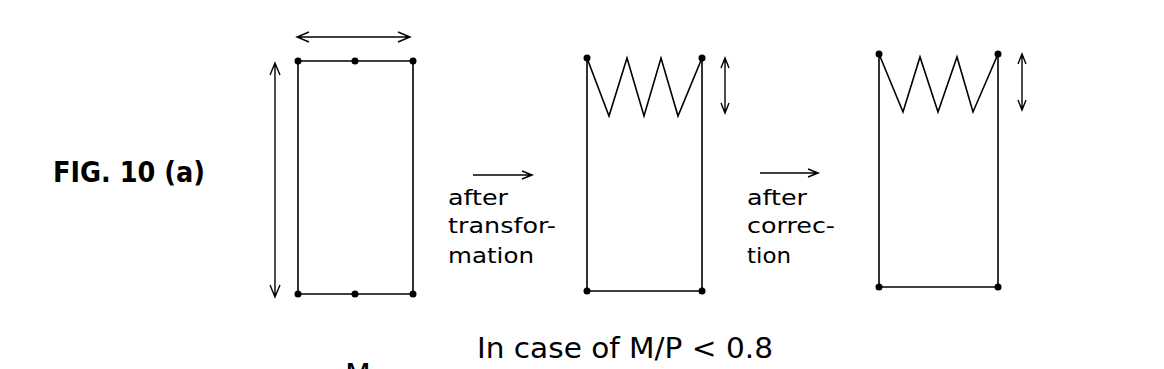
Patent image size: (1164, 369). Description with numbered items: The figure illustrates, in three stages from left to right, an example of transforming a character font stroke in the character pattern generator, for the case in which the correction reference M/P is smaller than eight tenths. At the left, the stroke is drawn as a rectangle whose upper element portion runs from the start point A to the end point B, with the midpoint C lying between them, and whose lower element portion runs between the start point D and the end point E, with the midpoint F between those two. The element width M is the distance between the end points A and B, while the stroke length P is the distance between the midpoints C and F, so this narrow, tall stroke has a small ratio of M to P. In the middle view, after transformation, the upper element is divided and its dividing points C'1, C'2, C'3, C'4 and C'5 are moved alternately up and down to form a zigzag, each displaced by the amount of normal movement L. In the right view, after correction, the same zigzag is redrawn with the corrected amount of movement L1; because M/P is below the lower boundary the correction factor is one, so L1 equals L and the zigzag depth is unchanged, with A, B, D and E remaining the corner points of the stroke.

The start point A is at (578, 43).
The end point B is at (719, 43).
The midpoint C is at (355, 80).
The start point D is at (717, 310).
The end point E is at (580, 310).
The midpoint F is at (355, 313).
The element width M is at (353, 22).
The stroke length P is at (264, 180).
The amount of normal movement L is at (736, 85).
The amount of movement after correction L1 is at (1060, 82).
The dividing point C'1 is at (617, 155).
The dividing point C'2 is at (614, 31).
The dividing point C'3 is at (649, 132).
The dividing point C'4 is at (672, 31).
The dividing point C'5 is at (679, 155).